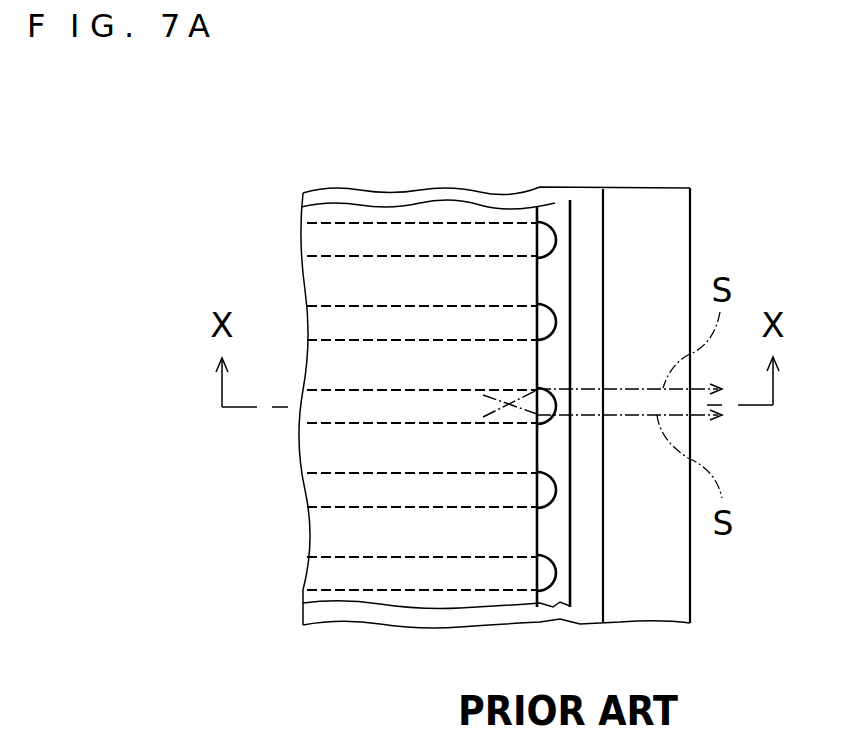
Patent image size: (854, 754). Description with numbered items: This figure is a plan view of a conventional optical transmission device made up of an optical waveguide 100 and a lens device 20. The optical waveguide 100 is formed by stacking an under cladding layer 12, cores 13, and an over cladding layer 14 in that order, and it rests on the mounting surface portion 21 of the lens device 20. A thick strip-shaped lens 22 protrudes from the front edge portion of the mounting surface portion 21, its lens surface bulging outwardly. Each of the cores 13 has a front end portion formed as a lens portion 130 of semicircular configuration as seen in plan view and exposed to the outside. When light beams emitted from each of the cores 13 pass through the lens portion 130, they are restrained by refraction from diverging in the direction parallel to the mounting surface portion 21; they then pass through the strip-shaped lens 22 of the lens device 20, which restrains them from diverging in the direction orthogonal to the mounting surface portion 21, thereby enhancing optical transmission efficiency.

The optical waveguide 100 is at (585, 96).
The lens device 20 is at (603, 96).
The over cladding layer 14 is at (342, 210).
The cores 13 is at (420, 320).
The under cladding layer 12 is at (563, 215).
The lens portion 130 is at (551, 310).
The mounting surface portion 21 is at (592, 197).
The strip-shaped lens 22 is at (648, 200).